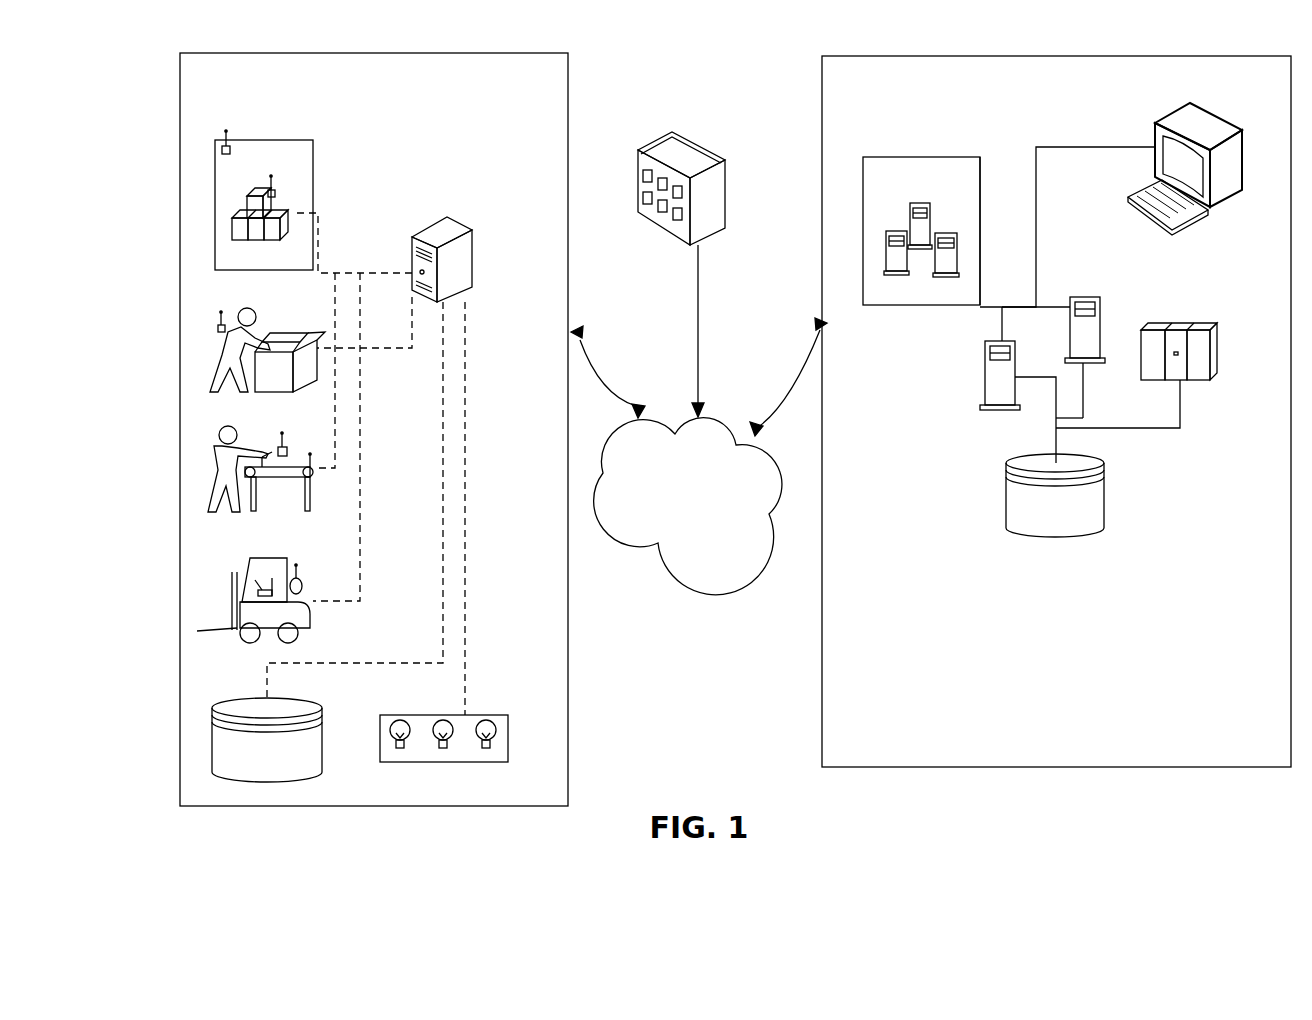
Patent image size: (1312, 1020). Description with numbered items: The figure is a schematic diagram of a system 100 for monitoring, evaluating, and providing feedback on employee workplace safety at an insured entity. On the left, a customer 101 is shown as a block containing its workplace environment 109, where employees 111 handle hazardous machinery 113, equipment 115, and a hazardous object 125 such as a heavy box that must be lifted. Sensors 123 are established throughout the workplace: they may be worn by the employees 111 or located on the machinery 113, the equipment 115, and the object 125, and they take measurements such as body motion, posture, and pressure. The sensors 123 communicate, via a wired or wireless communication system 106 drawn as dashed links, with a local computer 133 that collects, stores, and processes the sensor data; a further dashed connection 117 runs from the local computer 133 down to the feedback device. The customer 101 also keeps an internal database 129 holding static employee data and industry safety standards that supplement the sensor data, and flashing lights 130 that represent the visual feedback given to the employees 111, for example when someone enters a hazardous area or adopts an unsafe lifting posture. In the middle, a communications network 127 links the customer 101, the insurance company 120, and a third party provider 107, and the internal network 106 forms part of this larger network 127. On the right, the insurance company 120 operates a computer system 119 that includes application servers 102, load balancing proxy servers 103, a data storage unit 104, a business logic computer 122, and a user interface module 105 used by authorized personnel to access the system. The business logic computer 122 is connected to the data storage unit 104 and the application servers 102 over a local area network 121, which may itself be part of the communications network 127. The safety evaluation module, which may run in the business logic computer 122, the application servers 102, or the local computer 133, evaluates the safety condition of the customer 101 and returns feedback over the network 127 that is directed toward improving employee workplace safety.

The system 100 is at (682, 24).
The customer 101 is at (374, 458).
The application servers 102 is at (1042, 380).
The load balancing proxy servers 103 is at (921, 231).
The data storage unit 104 is at (1055, 495).
The user interface module 105 is at (1185, 183).
The communication system 106 is at (445, 368).
The third party provider 107 is at (696, 160).
The workplace environment 109 is at (203, 189).
The employees 111 is at (203, 364).
The hazardous machinery 113 is at (325, 492).
The equipment 115 is at (212, 615).
The connection 117 is at (467, 562).
The computer system 119 is at (1067, 189).
The insurance company 120 is at (1056, 444).
The local area network 121 is at (1001, 231).
The business logic computer 122 is at (1164, 375).
The sensors 123 is at (243, 129).
The hazardous object 125 is at (270, 400).
The communications network 127 is at (699, 420).
The internal database 129 is at (267, 740).
The flashing lights 130 is at (523, 732).
The local computer 133 is at (453, 213).